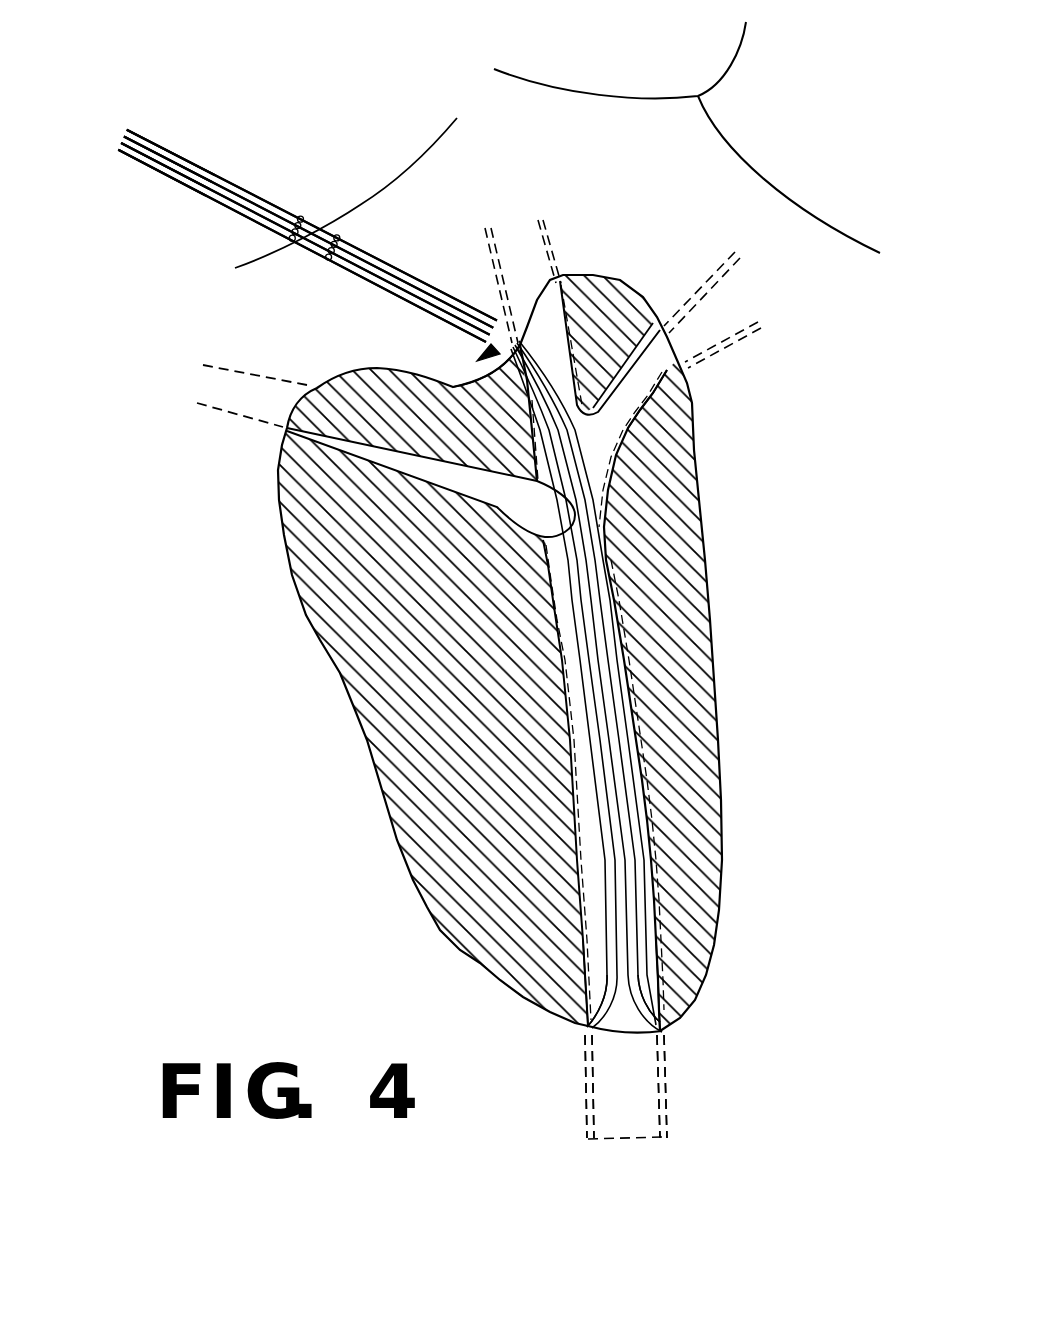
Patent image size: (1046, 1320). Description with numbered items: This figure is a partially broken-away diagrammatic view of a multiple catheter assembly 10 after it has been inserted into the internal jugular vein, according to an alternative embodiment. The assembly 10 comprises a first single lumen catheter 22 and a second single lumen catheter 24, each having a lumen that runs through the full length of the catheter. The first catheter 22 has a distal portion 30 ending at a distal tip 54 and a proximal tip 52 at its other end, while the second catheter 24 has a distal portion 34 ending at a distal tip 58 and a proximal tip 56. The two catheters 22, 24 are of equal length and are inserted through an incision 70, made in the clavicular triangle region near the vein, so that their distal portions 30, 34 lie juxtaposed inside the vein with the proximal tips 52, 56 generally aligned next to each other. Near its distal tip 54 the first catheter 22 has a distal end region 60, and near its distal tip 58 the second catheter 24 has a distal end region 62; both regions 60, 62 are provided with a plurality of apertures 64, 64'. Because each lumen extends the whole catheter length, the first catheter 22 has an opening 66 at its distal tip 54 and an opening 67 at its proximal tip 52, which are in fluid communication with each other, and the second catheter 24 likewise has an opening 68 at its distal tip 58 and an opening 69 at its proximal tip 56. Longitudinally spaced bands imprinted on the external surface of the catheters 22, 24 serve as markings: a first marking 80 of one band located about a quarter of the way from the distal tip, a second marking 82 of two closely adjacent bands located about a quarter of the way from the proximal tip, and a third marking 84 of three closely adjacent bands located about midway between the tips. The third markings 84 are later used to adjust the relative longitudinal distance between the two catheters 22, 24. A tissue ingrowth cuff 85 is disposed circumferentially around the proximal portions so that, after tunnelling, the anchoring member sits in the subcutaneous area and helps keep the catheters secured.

The multiple catheter assembly 10 is at (270, 150).
The first single lumen catheter 22 is at (148, 139).
The second single lumen catheter 24 is at (195, 186).
The distal portion 30 is at (622, 812).
The distal portion 34 is at (593, 797).
The proximal tip 52 is at (126, 130).
The distal tip 54 is at (662, 1026).
The proximal tip 56 is at (119, 149).
The distal tip 58 is at (586, 1027).
The distal end region 60 is at (640, 970).
The distal end region 62 is at (610, 970).
The apertures 64 is at (648, 683).
The apertures 64' is at (508, 688).
The opening 66 is at (662, 1035).
The opening 67 is at (125, 135).
The opening 68 is at (584, 1034).
The opening 69 is at (121, 143).
The incision 70 is at (492, 333).
The first marking 80 is at (595, 730).
The second marking 82 is at (470, 372).
The third marking 84 is at (298, 214).
The tissue ingrowth cuff 85 is at (342, 238).